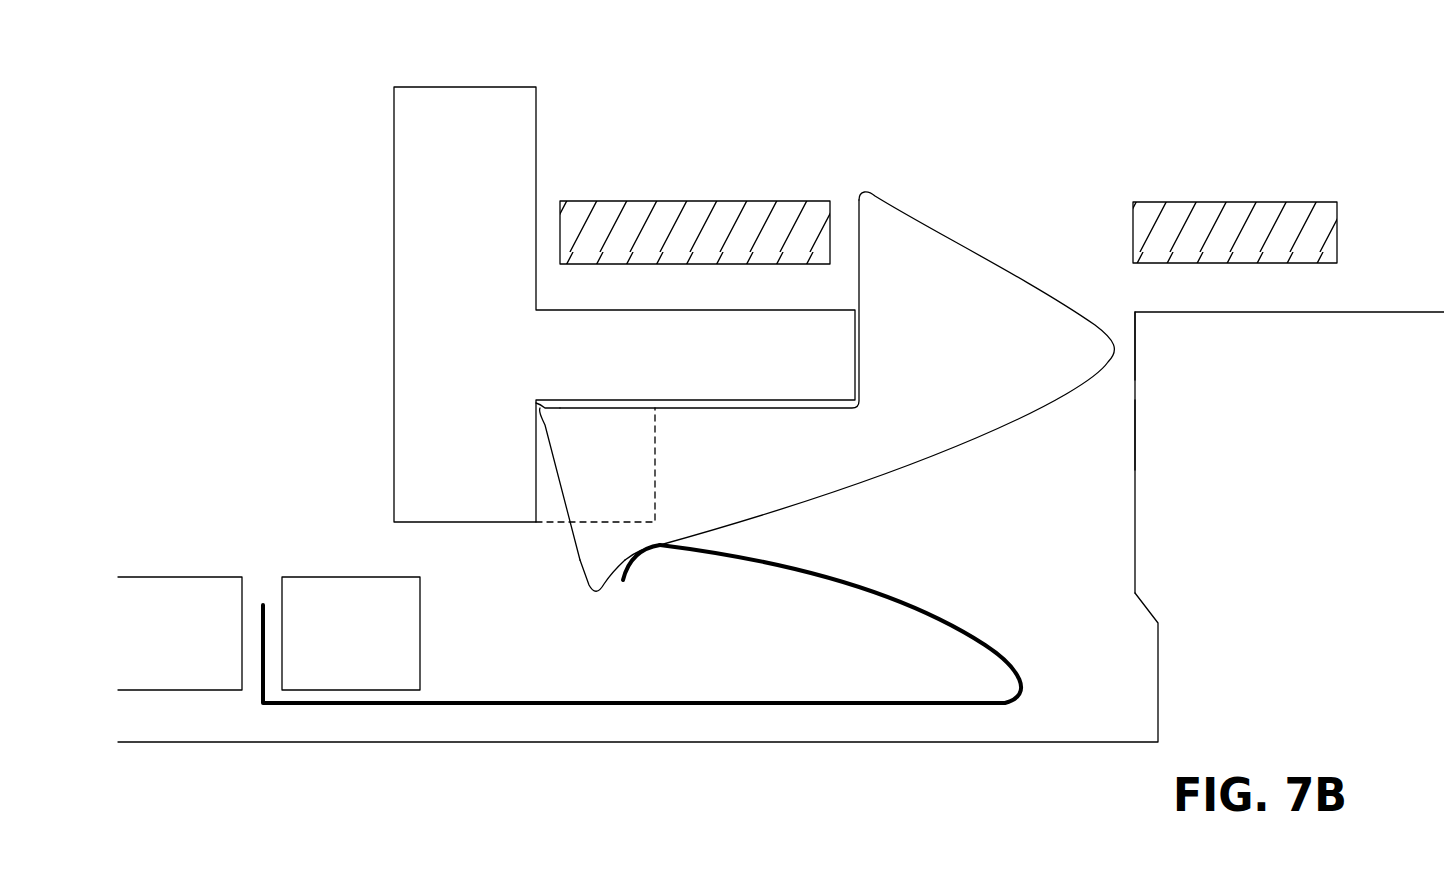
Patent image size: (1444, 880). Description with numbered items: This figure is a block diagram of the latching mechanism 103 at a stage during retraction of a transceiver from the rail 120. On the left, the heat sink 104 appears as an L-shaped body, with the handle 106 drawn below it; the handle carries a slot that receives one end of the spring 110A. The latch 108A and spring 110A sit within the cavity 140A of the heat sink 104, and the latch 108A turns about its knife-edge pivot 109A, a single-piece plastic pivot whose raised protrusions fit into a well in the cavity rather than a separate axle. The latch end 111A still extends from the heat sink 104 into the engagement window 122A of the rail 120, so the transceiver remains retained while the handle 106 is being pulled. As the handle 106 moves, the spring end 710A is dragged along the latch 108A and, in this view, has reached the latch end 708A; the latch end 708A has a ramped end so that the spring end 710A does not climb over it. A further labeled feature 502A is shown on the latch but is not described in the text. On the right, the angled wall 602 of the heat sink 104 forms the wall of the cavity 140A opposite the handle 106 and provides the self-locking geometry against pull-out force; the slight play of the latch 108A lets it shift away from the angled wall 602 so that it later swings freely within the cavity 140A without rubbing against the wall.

The latching mechanism 103 is at (243, 209).
The heat sink 104 is at (372, 266).
The handle 106 is at (302, 562).
The latch 108A is at (826, 460).
The knife-edge pivot 109A is at (538, 402).
The spring 110A is at (524, 702).
The latch end 111A is at (876, 278).
The rail 120 is at (661, 196).
The engagement window 122A is at (1048, 143).
The cavity 140A is at (1118, 431).
The clip diagonal segment 502A is at (543, 458).
The angled wall 602 is at (1136, 359).
The latch end 708A is at (585, 582).
The spring end 710A is at (675, 552).